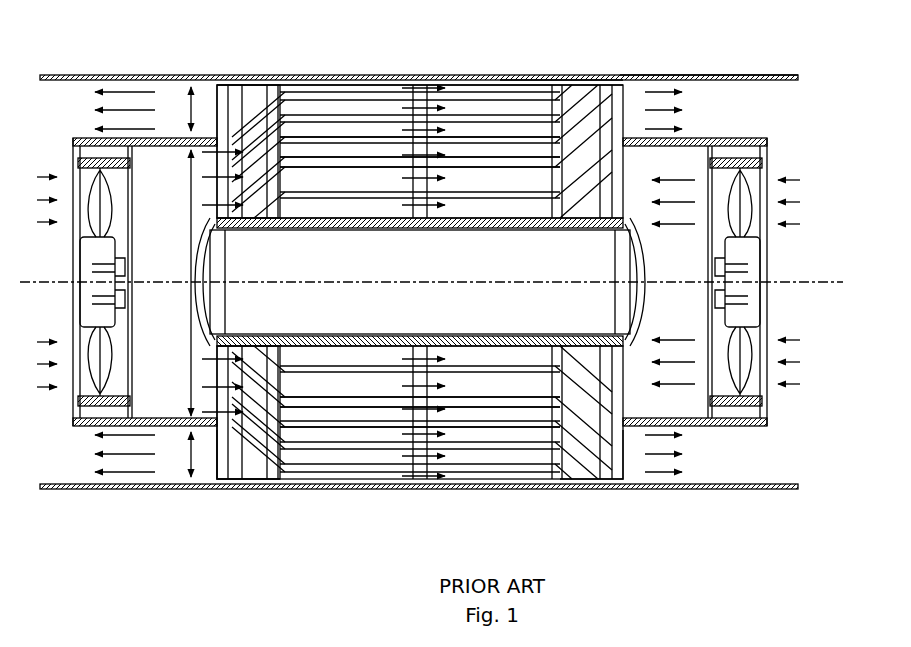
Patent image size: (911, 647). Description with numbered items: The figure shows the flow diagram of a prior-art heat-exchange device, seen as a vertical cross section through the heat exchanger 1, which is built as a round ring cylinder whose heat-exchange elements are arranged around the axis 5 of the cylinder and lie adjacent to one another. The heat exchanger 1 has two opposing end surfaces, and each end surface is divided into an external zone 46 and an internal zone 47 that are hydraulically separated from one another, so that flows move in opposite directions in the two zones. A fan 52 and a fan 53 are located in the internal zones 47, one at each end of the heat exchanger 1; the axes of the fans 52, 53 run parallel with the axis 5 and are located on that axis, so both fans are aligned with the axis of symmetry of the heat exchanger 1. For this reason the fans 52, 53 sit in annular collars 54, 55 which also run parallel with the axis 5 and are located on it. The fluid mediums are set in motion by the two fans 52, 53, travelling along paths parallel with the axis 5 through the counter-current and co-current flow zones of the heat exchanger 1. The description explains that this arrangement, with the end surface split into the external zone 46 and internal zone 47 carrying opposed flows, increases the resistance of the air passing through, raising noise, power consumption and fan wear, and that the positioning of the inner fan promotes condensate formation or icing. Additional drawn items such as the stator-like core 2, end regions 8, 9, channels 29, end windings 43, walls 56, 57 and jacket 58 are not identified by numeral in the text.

The heat exchanger 1 is at (480, 75).
The stator 2 is at (375, 108).
The axis 5 is at (838, 287).
The housing end wall (left) 8 is at (219, 485).
The housing end wall (right) 9 is at (625, 491).
The cooling channels 29 is at (522, 140).
The end windings 43 is at (314, 108).
The external zone 46 is at (190, 117).
The internal zone 47 is at (190, 348).
The fan 52 is at (98, 222).
The fan 53 is at (748, 233).
The annular collar 54 is at (112, 140).
The annular collar 55 is at (703, 138).
The duct wall (left) 56 is at (137, 75).
The duct wall (right) 57 is at (756, 75).
The cooling jacket 58 is at (562, 77).